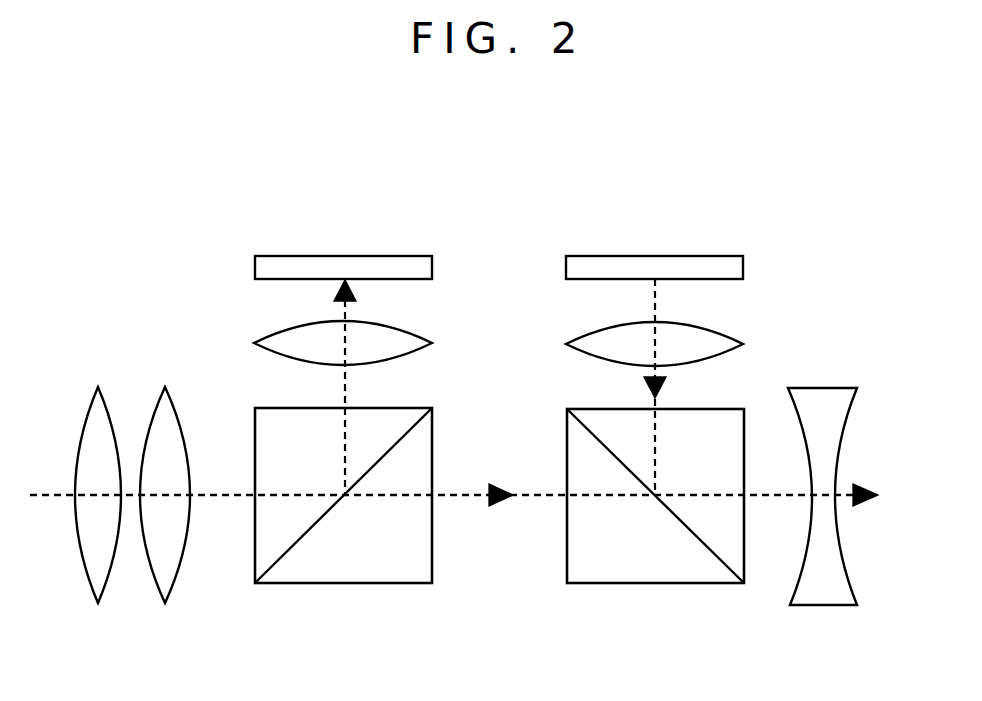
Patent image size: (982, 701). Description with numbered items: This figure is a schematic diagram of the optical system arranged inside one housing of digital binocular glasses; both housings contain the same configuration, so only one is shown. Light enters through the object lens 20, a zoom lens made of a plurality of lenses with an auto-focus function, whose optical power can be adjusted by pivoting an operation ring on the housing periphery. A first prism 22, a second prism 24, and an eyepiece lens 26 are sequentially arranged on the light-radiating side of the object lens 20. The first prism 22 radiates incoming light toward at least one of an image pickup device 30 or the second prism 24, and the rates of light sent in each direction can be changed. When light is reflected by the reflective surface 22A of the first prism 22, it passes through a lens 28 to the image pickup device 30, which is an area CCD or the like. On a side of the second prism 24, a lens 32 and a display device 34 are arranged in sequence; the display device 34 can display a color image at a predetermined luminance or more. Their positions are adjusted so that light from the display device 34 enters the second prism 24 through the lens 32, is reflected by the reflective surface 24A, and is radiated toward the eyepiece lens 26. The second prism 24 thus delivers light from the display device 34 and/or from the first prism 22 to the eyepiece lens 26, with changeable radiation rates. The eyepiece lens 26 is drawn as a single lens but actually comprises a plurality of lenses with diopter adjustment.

The object lens 20 is at (187, 619).
The first prism 22 is at (390, 584).
The reflective surface 22A is at (277, 557).
The second prism 24 is at (648, 586).
The reflective surface 24A is at (708, 545).
The eyepiece lens 26 is at (843, 607).
The lens 28 is at (255, 343).
The image pickup device 30 is at (265, 256).
The lens 32 is at (730, 336).
The display device 34 is at (723, 256).